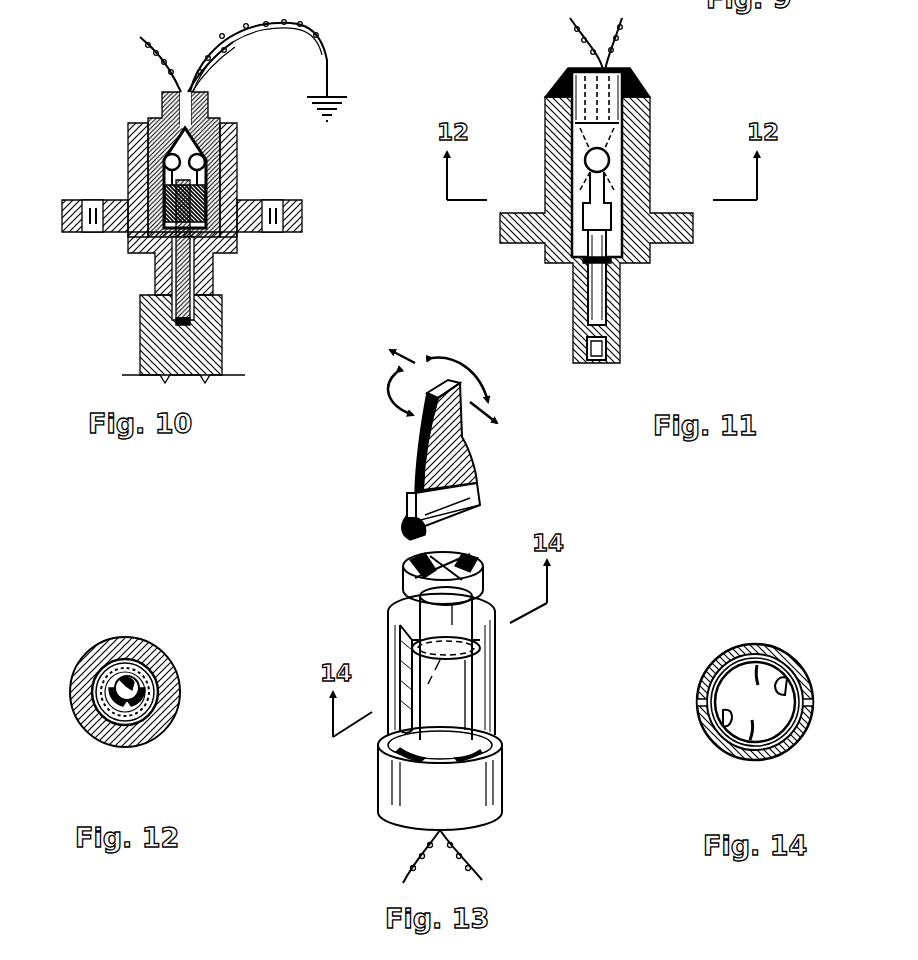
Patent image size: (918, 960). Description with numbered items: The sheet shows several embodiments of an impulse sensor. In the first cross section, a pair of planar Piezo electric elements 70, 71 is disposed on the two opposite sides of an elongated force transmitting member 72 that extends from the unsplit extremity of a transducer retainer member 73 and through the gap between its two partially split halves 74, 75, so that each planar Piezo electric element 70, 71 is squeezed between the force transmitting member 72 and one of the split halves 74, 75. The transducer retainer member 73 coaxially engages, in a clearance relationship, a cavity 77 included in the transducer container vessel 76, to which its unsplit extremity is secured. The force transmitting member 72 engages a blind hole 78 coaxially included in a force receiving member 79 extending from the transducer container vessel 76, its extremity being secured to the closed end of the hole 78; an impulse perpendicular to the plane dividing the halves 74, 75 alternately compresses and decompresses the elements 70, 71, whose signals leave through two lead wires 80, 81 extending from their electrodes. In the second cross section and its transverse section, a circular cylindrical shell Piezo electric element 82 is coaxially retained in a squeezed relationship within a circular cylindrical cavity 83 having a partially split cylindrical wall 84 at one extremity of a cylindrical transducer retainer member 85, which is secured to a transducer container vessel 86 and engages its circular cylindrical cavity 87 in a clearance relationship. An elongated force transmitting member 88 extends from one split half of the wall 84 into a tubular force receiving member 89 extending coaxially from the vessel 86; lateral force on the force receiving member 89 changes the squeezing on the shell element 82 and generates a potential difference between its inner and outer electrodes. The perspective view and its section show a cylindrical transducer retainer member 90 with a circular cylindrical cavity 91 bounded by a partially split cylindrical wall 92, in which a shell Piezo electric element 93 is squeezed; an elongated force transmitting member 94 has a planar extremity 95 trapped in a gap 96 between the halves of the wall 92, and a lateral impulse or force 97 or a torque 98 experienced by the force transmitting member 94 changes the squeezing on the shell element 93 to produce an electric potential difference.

In FIG. 10, the planar Piezo electric element 70 is at (140, 232).
In FIG. 10, the planar Piezo electric element 71 is at (227, 233).
In FIG. 10, the elongated force transmitting member 72 is at (172, 272).
In FIG. 10, the transducer retainer member 73 is at (148, 135).
In FIG. 10, the partially split half 74 is at (150, 176).
In FIG. 10, the partially split half 75 is at (213, 185).
In FIG. 10, the transducer container vessel 76 is at (226, 150).
In FIG. 10, the cavity 77 is at (150, 212).
In FIG. 10, the blind hole 78 is at (200, 273).
In FIG. 10, the force receiving member 79 is at (192, 343).
In FIG. 10, the lead wire 80 is at (158, 61).
In FIG. 10, the lead wire 81 is at (222, 62).
In FIG. 11, the circular cylindrical shell Piezo electric element 82 is at (675, 241).
In FIG. 12, the circular cylindrical shell Piezo electric element 82 is at (155, 645).
In FIG. 11, the circular cylindrical cavity 83 is at (570, 262).
In FIG. 12, the circular cylindrical cavity 83 is at (92, 727).
In FIG. 11, the partially split cylindrical wall 84 is at (620, 160).
In FIG. 12, the partially split cylindrical wall 84 is at (148, 715).
In FIG. 11, the transducer retainer member 85 is at (568, 97).
In FIG. 11, the transducer container vessel 86 is at (546, 158).
In FIG. 12, the transducer container vessel 86 is at (88, 657).
In FIG. 11, the circular cylindrical cavity 87 is at (565, 212).
In FIG. 11, the elongated force transmitting member 88 is at (618, 283).
In FIG. 11, the tubular force receiving member 89 is at (623, 307).
In FIG. 13, the transducer retainer member 90 is at (482, 790).
In FIG. 13, the circular cylindrical cavity 91 is at (478, 655).
In FIG. 14, the circular cylindrical cavity 91 is at (712, 740).
In FIG. 13, the partially split cylindrical wall 92 is at (458, 692).
In FIG. 14, the partially split cylindrical wall 92 is at (802, 733).
In FIG. 13, the circular cylindrical shell Piezo electric element 93 is at (400, 692).
In FIG. 14, the circular cylindrical shell Piezo electric element 93 is at (803, 662).
In FIG. 13, the elongated force transmitting member 94 is at (427, 443).
In FIG. 13, the planar extremity 95 is at (407, 518).
In FIG. 13, the gap 96 is at (470, 558).
In FIG. 13, the impulse or force 97 is at (493, 408).
In FIG. 13, the torque 98 is at (390, 398).